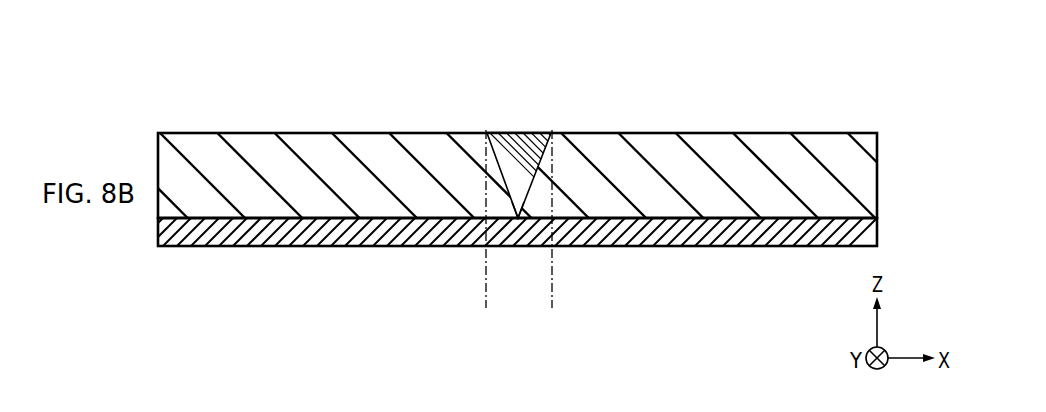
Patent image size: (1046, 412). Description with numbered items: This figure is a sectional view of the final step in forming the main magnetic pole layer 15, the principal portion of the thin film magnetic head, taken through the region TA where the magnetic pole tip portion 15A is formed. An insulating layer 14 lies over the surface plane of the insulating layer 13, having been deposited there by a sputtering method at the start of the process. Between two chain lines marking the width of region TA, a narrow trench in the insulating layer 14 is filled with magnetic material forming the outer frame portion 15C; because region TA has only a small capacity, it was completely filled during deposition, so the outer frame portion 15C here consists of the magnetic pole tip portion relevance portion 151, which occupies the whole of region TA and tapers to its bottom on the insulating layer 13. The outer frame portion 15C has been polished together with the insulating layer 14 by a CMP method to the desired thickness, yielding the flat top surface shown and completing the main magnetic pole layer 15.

The insulating layer 13 is at (866, 228).
The insulating layer 14 is at (866, 156).
The main magnetic pole layer 15 is at (533, 104).
The outer frame portion 15C is at (519, 133).
The magnetic pole tip portion relevance portion 151 is at (518, 218).
The magnetic pole tip portion 15A is at (552, 306).